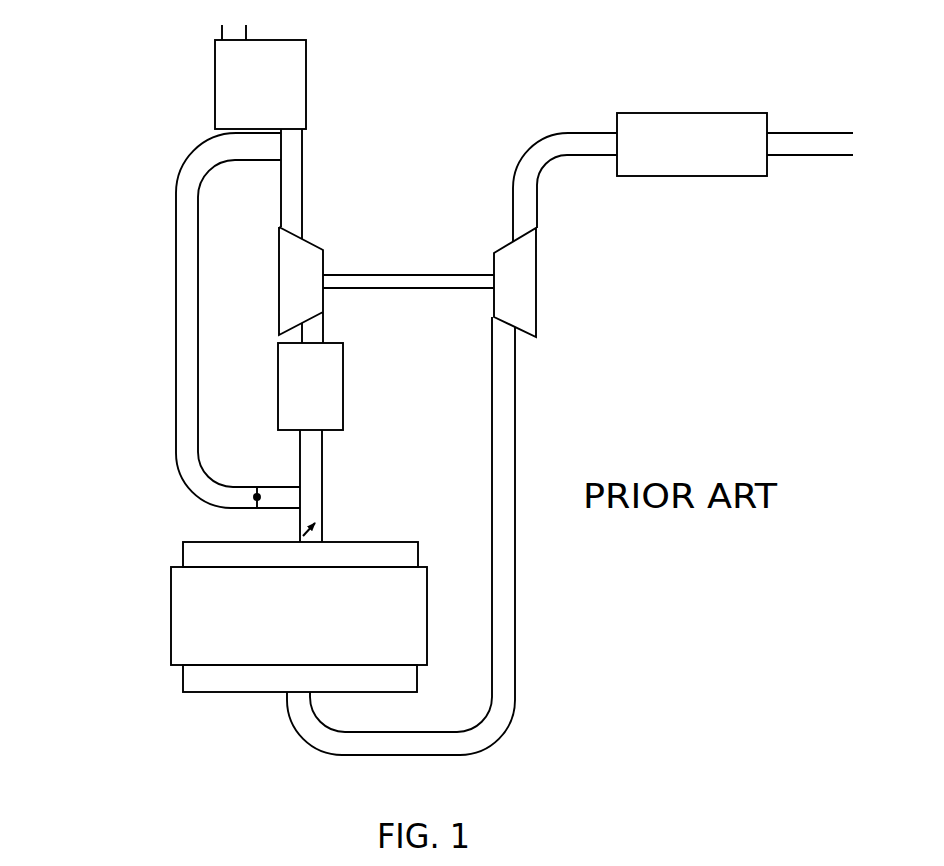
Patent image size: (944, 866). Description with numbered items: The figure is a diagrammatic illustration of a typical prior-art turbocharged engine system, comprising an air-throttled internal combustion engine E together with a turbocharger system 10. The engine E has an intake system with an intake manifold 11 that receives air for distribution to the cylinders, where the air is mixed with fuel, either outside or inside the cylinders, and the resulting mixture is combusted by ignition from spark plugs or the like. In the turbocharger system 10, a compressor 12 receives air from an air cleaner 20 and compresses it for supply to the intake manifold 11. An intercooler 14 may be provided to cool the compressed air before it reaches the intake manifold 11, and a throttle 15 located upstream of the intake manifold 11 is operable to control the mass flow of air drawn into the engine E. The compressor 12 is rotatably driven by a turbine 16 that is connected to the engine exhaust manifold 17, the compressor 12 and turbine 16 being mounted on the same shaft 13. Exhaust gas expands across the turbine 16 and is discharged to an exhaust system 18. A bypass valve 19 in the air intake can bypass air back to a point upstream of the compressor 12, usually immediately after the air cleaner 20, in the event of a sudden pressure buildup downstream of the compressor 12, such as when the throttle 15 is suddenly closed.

The turbocharger system 10 is at (628, 347).
The intake manifold 11 is at (190, 555).
The compressor 12 is at (302, 253).
The shaft 13 is at (365, 278).
The intercooler 14 is at (320, 390).
The throttle 15 is at (326, 517).
The turbine 16 is at (517, 263).
The exhaust manifold 17 is at (247, 678).
The exhaust system 18 is at (716, 105).
The bypass valve 19 is at (241, 496).
The air cleaner 20 is at (270, 73).
The internal combustion engine E is at (168, 605).